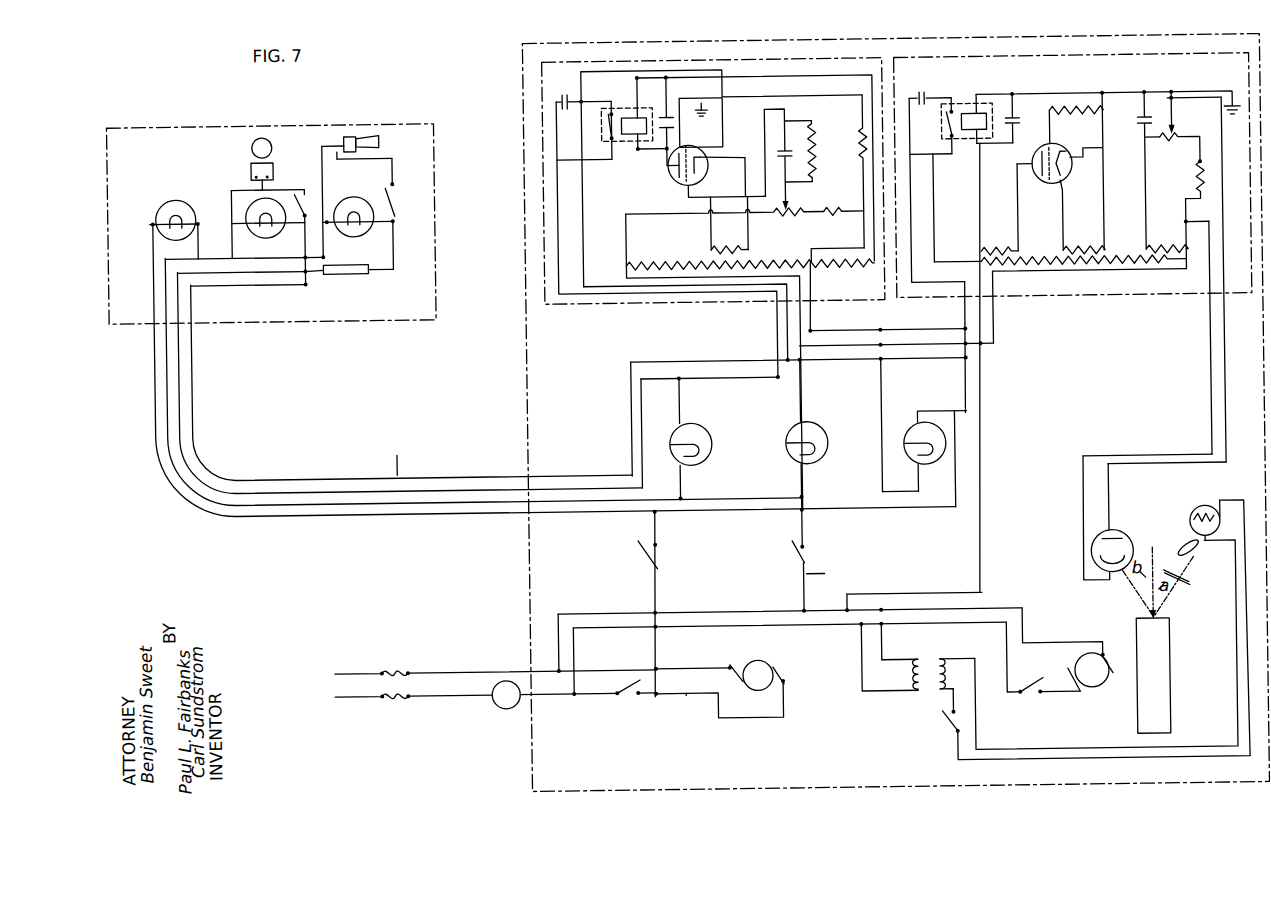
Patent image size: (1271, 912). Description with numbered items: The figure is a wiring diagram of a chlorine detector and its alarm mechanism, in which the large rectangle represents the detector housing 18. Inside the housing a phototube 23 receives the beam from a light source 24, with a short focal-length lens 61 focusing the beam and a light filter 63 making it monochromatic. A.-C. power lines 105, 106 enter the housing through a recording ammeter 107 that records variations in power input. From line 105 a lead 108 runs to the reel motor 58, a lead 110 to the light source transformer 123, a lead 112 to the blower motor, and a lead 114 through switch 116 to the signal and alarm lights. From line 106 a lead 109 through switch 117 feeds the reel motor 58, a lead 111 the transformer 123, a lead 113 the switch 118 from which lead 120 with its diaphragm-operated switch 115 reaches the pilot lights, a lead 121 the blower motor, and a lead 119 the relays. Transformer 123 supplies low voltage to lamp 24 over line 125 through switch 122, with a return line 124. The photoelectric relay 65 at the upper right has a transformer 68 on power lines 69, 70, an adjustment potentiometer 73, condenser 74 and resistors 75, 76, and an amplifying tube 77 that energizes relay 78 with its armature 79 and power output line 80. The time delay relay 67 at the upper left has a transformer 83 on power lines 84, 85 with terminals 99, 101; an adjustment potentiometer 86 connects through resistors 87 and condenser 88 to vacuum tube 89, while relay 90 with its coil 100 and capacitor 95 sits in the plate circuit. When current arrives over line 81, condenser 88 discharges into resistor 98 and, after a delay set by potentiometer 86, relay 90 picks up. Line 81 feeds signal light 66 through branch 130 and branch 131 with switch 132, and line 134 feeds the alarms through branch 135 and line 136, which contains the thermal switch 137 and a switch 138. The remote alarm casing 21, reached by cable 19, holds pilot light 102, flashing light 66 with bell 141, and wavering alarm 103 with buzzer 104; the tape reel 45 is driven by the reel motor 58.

The detector housing 18 is at (526, 773).
The cable 19 is at (397, 454).
The alarm casing 21 is at (289, 322).
The phototube 23 is at (1121, 537).
The light source 24 is at (1195, 514).
The tape reel 45 is at (1167, 704).
The reel motor 58 is at (1096, 688).
The short focal-length lens 61 is at (1197, 553).
The light filter 63 is at (1187, 594).
The photoelectric relay 65 is at (1110, 306).
The signal light 66 is at (250, 222).
The time delay relay 67 is at (667, 310).
The transformer 68 is at (1126, 262).
The A.-C. power line 69 is at (940, 188).
The A.-C. power line 70 is at (997, 289).
The adjustment potentiometer 73 is at (1183, 143).
The condenser 74 is at (1142, 136).
The resistor 75 is at (1076, 124).
The resistor 76 is at (1199, 186).
The amplifying tube 77 is at (1051, 187).
The relay 78 is at (960, 107).
The relay armature 79 is at (984, 106).
The power output line 80 is at (917, 218).
The line 81 is at (587, 204).
The transformer 83 is at (693, 262).
The power line 84 is at (833, 332).
The power line 85 is at (629, 243).
The adjustment potentiometer 86 is at (797, 219).
The resistor 87 is at (843, 194).
The condenser 88 is at (787, 151).
The vacuum tube 89 is at (673, 181).
The relay 90 is at (631, 106).
The capacitor 95 is at (675, 124).
The resistor 98 is at (815, 141).
The terminal 99 is at (873, 269).
The coil 100 is at (634, 135).
The terminal 101 is at (810, 261).
The signal light 102 is at (168, 217).
The warning alarm 103 is at (359, 201).
The buzzer or horn 104 is at (372, 131).
The A.-C. power line 105 is at (459, 668).
The A.-C. power line 106 is at (456, 698).
The recording ammeter 107 is at (500, 708).
The lead 108 is at (722, 612).
The lead 109 is at (765, 630).
The lead 110 is at (879, 645).
The lead 111 is at (858, 684).
The lead 112 is at (696, 668).
The lead 113 is at (584, 696).
The lead 114 is at (293, 500).
The switch 115 is at (638, 553).
The switch 116 is at (790, 545).
The switch 117 is at (1027, 701).
The switch 118 is at (625, 696).
The lead 119 is at (957, 596).
The lead 120 is at (353, 512).
The lead 121 is at (683, 696).
The switch 122 is at (939, 724).
The light source transformer 123 is at (922, 697).
The return line 124 is at (1196, 753).
The line 125 is at (1188, 766).
The branch 130 is at (801, 380).
The branch 131 is at (270, 473).
The switch 132 is at (307, 185).
The line 134 is at (727, 382).
The branch 135 is at (696, 403).
The line 136 is at (329, 486).
The thermally operating circuit-switch 137 is at (348, 271).
The switch 138 is at (398, 195).
The bell 141 is at (255, 165).